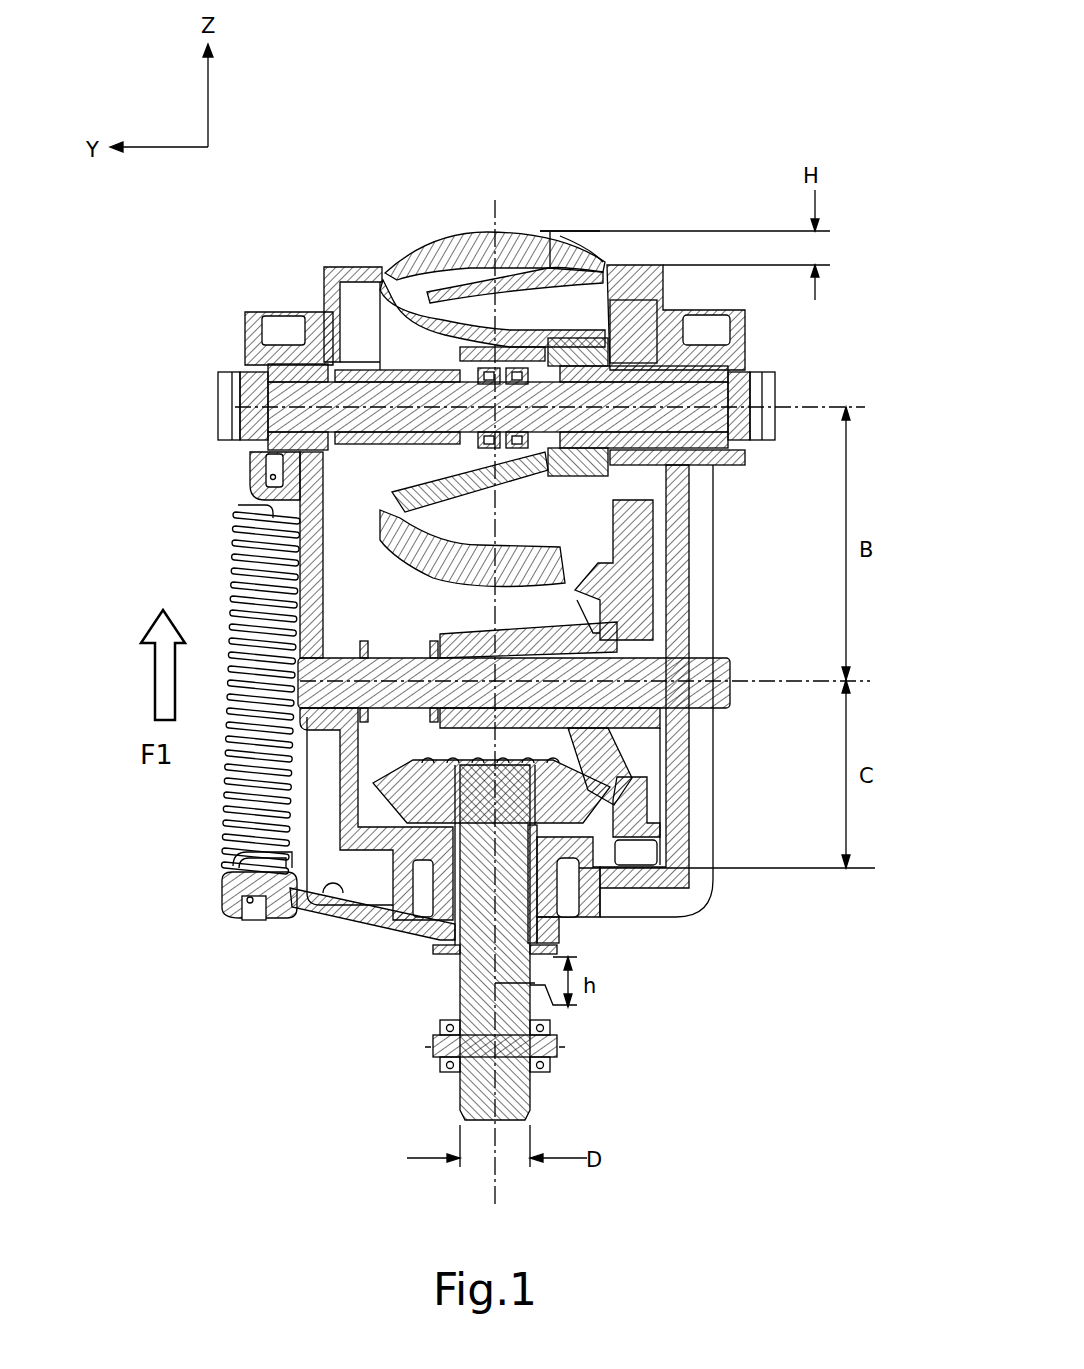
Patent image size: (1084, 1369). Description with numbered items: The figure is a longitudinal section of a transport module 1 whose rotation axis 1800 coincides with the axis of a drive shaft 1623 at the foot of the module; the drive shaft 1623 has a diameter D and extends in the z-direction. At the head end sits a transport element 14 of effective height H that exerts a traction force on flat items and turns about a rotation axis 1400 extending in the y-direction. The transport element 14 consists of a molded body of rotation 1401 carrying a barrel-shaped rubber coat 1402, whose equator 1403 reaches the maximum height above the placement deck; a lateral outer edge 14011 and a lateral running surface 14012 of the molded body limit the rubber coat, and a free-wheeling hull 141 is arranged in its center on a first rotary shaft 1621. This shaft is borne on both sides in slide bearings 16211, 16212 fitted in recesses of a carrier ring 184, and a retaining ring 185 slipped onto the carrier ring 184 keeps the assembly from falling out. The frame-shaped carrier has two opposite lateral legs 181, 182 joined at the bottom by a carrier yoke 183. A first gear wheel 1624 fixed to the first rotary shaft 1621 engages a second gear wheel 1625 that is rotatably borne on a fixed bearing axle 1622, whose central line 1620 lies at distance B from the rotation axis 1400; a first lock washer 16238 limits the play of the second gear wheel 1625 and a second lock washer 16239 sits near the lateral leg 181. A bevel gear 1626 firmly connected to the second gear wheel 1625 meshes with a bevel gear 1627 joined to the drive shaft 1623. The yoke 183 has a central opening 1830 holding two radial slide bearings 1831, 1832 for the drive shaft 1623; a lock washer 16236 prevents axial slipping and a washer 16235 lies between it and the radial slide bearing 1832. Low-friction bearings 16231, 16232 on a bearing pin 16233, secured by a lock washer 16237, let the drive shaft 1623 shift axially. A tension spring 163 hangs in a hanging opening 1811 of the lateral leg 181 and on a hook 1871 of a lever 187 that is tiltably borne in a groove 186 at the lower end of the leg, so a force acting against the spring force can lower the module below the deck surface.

The transport module 1 is at (608, 123).
The transport element 14 is at (507, 226).
The free-wheeling hull 141 is at (517, 370).
The molded body of rotation 1401 is at (477, 273).
The barrel-shaped rubber coat 1402 is at (435, 253).
The lateral outer edge 14011 is at (387, 273).
The lateral running surface 14012 is at (585, 252).
The equator 1403 is at (768, 210).
The retaining ring 185 is at (323, 327).
The slide bearing 16211 is at (310, 400).
The first rotary shaft 1621 is at (290, 365).
The slide bearing 16212 is at (830, 350).
The rotation axis 1400 is at (884, 383).
The carrier ring 184 is at (238, 433).
The hanging opening 1811 is at (253, 478).
The lateral leg 181 is at (307, 518).
The first lock washer 16238 is at (360, 650).
The second lock washer 16239 is at (433, 645).
The tension spring 163 is at (233, 633).
The groove 186 is at (313, 853).
The hook 1871 is at (228, 893).
The lever 187 is at (310, 918).
The washer 16235 is at (430, 943).
The lock washer 16236 is at (453, 950).
The drive shaft 1623 is at (463, 1000).
The lock washer 16237 is at (443, 1063).
The low-friction bearing 16232 is at (452, 1075).
The bearing pin 16233 is at (666, 1083).
The low-friction bearing 16231 is at (547, 1067).
The first gear wheel 1624 is at (689, 479).
The second gear wheel 1625 is at (689, 521).
The lateral leg 182 is at (689, 556).
The bevel gear 1626 is at (603, 583).
The fixed bearing axle 1622 is at (796, 644).
The central line 1620 is at (825, 725).
The bevel gear 1627 is at (597, 780).
The carrier yoke 183 is at (633, 888).
The radial slide bearing 1831 is at (590, 913).
The central opening 1830 is at (558, 900).
The radial slide bearing 1832 is at (557, 922).
The rotation axis 1800 is at (497, 1197).